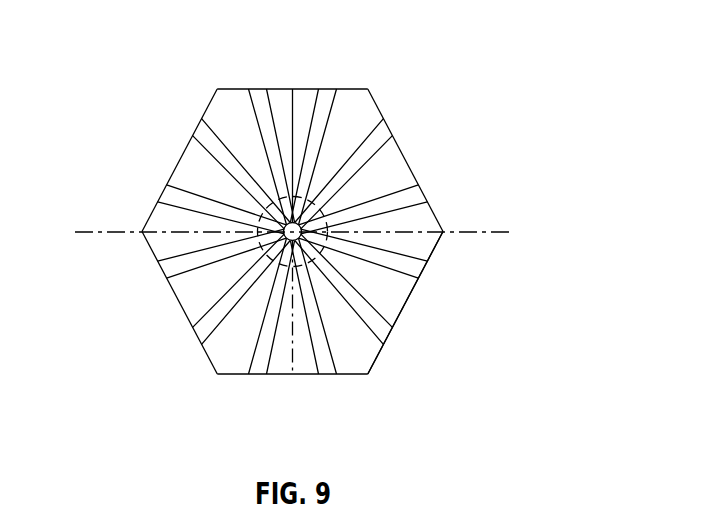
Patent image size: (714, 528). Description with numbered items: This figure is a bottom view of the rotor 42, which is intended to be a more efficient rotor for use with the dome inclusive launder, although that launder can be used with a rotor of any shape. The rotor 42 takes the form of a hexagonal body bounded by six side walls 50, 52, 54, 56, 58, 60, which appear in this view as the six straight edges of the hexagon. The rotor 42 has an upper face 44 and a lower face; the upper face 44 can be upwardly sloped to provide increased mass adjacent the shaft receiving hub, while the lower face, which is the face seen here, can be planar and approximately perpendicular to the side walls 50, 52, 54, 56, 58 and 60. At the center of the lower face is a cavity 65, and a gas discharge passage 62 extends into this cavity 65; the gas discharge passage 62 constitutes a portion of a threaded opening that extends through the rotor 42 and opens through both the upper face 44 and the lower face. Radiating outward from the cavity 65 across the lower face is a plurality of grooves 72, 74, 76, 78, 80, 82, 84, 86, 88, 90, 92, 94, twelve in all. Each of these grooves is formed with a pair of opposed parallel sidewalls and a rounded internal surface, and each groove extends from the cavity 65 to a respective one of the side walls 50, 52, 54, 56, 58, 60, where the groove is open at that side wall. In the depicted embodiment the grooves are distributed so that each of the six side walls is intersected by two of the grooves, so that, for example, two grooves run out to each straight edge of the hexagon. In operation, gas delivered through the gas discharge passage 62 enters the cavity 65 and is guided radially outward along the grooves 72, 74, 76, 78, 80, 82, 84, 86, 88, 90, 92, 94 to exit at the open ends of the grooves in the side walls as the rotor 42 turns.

The rotor 42 is at (149, 192).
The upper face 44 is at (460, 338).
The side wall 50 is at (178, 157).
The side wall 52 is at (291, 88).
The side wall 54 is at (387, 112).
The side wall 56 is at (407, 304).
The side wall 58 is at (293, 377).
The side wall 60 is at (178, 306).
The gas discharge passage 62 is at (318, 200).
The cavity 65 is at (206, 360).
The groove 72 is at (325, 376).
The groove 74 is at (387, 332).
The groove 76 is at (418, 266).
The groove 78 is at (421, 201).
The groove 80 is at (385, 122).
The groove 82 is at (328, 97).
The groove 84 is at (259, 97).
The groove 86 is at (206, 137).
The groove 88 is at (170, 197).
The groove 90 is at (167, 265).
The groove 92 is at (202, 330).
The groove 94 is at (257, 367).